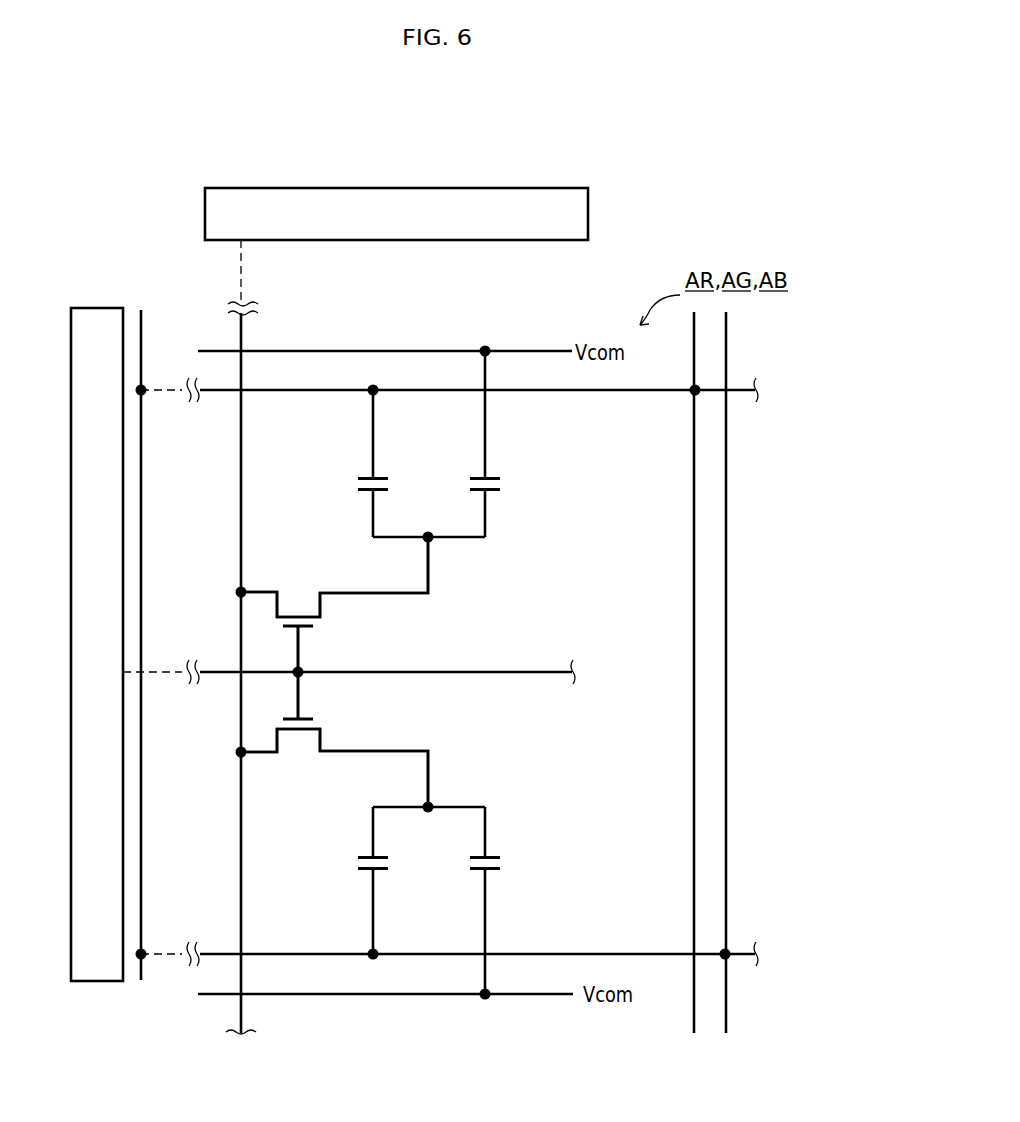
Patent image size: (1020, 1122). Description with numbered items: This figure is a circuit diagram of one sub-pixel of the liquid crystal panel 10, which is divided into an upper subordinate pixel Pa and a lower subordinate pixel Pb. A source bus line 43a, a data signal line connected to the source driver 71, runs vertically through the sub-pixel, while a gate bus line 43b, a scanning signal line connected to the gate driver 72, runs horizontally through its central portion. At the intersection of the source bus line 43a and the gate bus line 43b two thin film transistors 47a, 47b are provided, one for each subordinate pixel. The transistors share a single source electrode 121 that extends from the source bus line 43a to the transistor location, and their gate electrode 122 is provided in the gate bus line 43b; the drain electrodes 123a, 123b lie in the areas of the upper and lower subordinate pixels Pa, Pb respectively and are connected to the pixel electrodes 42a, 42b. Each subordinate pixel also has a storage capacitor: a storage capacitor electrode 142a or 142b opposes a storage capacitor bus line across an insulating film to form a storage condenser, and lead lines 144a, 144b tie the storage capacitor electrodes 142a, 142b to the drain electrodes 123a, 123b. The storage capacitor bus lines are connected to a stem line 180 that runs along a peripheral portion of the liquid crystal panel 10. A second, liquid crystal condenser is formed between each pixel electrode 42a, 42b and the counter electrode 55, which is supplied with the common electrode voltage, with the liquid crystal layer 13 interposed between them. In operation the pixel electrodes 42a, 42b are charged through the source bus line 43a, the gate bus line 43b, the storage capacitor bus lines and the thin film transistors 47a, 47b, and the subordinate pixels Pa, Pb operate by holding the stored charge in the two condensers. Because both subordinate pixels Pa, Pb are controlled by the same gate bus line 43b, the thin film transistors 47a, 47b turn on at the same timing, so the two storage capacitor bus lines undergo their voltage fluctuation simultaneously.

The liquid crystal panel 10 is at (640, 213).
The liquid crystal layer 13 is at (466, 483).
The pixel electrode 42a is at (495, 497).
The pixel electrode 42b is at (495, 857).
The source bus line 43a is at (243, 328).
The gate bus line 43b is at (530, 671).
The thin film transistor 47a is at (325, 622).
The thin film transistor 47b is at (325, 722).
The counter electrode 55 is at (490, 475).
The source driver 71 is at (430, 188).
The gate driver 72 is at (71, 943).
The source electrode 121 is at (277, 618).
The gate electrode 122 is at (290, 626).
The drain electrode 123a is at (320, 617).
The drain electrode 123b is at (320, 729).
The storage capacitor electrode 142a is at (365, 492).
The storage capacitor electrode 142b is at (365, 857).
The lead line 144a is at (400, 538).
The lead line 144b is at (400, 806).
The stem line 180 is at (142, 315).
The subordinate pixel Pa is at (572, 562).
The subordinate pixel Pb is at (565, 760).